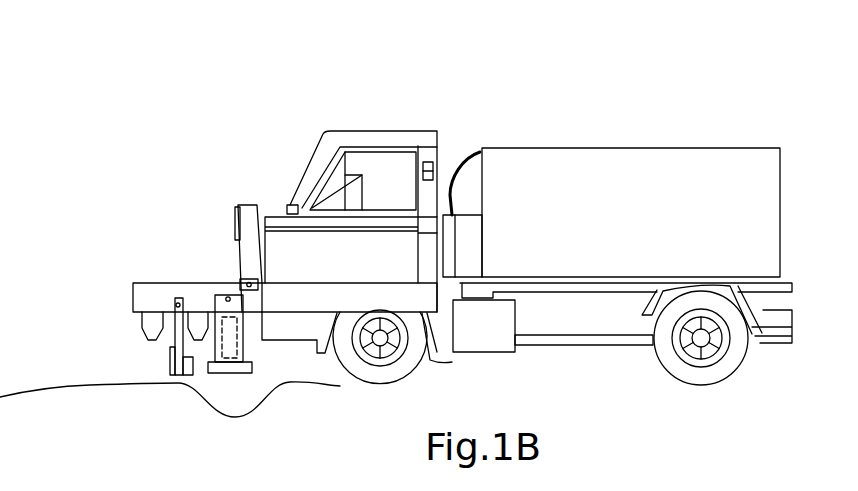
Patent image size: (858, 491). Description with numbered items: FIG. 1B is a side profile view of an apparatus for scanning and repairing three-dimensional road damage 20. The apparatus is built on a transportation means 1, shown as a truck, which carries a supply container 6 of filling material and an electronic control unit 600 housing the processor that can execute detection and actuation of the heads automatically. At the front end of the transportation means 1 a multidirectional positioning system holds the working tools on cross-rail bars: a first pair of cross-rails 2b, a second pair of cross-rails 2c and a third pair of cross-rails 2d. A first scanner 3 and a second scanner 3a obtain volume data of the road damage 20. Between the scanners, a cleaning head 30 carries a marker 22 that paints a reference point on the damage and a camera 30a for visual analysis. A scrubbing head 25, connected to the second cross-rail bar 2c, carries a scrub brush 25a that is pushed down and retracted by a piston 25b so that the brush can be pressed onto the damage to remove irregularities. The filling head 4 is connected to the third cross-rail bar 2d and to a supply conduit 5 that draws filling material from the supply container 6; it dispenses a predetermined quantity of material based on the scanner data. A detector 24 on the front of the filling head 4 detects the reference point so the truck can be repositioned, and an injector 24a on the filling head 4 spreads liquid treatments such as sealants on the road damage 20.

The transportation means 1 is at (768, 125).
The electronic control unit 600 is at (362, 186).
The supply container 6 is at (768, 208).
The supply conduit 5 is at (456, 168).
The filling head 4 is at (242, 205).
The detector 24 is at (261, 262).
The injector 24a is at (237, 208).
The scrubbing head 25 is at (248, 293).
The scrub brush 25a is at (255, 376).
The piston 25b is at (237, 343).
The first pair of cross-rails 2b is at (178, 303).
The second pair of cross-rails 2c is at (228, 297).
The third pair of cross-rails 2d is at (247, 283).
The first scanner 3 is at (140, 328).
The second scanner 3a is at (208, 310).
The marker 22 is at (170, 360).
The three-dimensional road damage 20 is at (243, 416).
The cleaning head 30 is at (182, 382).
The camera 30a is at (197, 383).